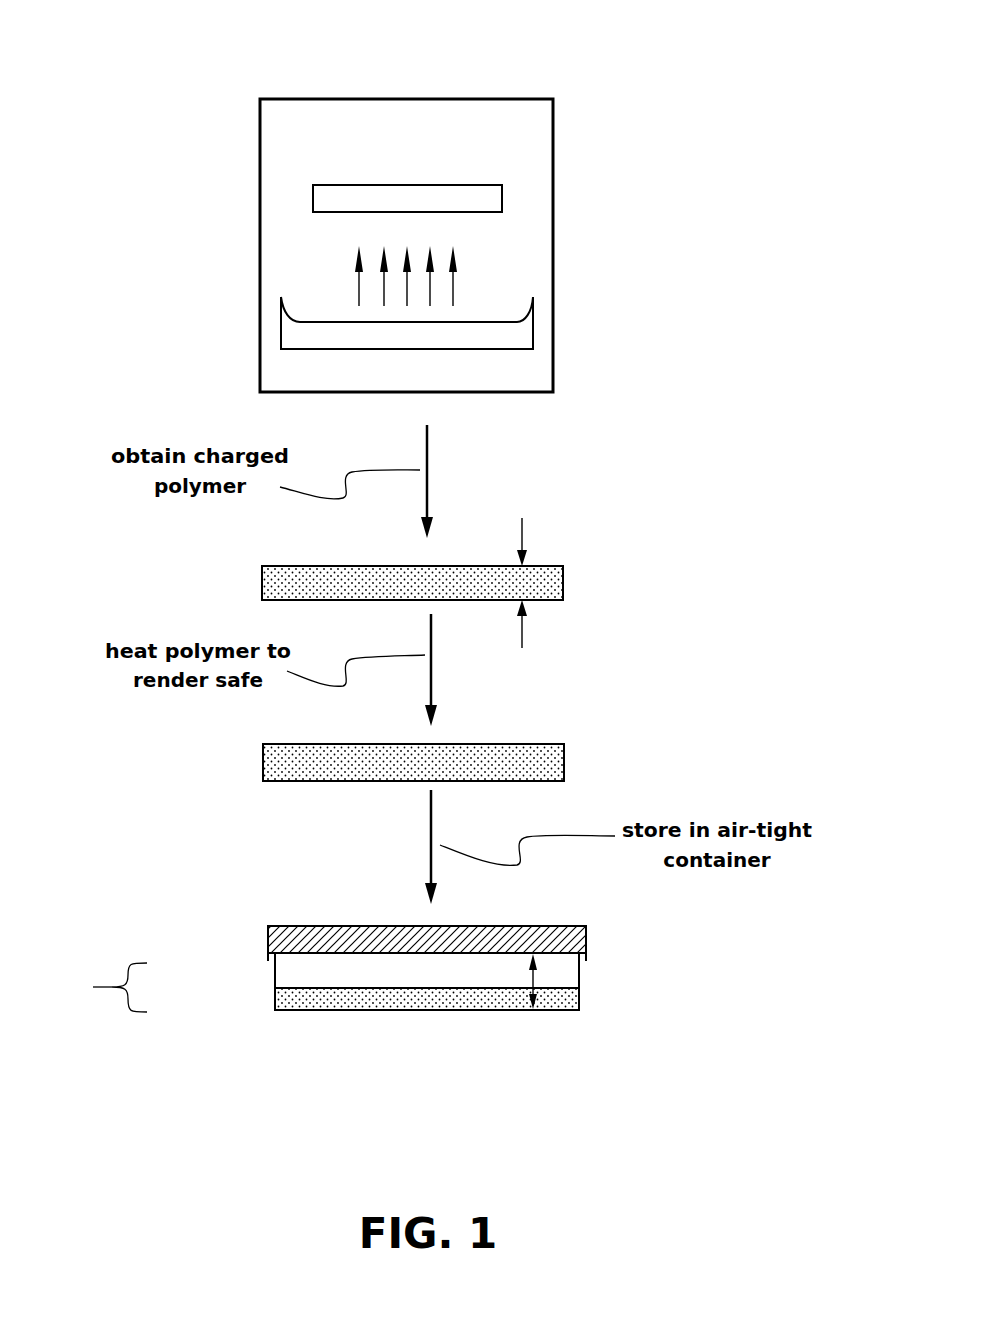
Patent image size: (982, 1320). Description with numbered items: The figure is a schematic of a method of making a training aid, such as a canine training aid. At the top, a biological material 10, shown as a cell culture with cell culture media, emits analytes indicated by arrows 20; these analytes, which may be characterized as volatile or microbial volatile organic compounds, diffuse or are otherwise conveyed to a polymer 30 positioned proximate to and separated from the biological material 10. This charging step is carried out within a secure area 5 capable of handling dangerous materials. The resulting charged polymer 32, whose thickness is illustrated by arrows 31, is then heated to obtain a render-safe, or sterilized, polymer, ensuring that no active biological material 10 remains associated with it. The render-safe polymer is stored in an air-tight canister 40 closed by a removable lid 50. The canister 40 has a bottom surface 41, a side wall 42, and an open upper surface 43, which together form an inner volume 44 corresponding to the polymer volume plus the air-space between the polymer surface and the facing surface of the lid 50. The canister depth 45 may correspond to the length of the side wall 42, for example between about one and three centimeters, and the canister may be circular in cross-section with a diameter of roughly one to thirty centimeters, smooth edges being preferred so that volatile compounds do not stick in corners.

The secure area 5 is at (347, 99).
The polymer 30 is at (417, 185).
The arrows 20 is at (453, 276).
The biological material 10 is at (523, 332).
The arrows 31 is at (523, 580).
The charged polymer 32 is at (563, 575).
The removable lid 50 is at (287, 937).
The air-tight canister 40 is at (290, 977).
The inner volume 44 is at (102, 987).
The bottom surface 41 is at (330, 1012).
The open upper surface 43 is at (416, 955).
The side wall 42 is at (579, 979).
The canister depth 45 is at (537, 978).